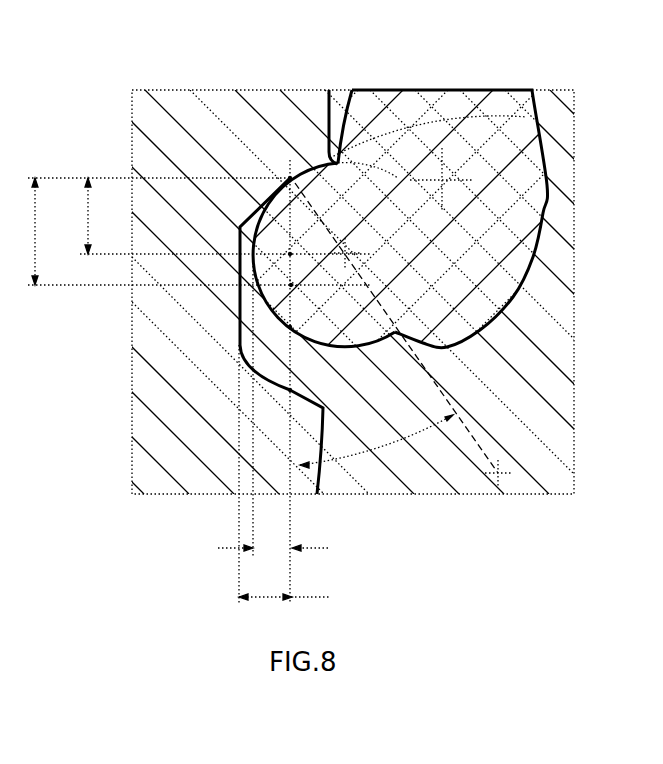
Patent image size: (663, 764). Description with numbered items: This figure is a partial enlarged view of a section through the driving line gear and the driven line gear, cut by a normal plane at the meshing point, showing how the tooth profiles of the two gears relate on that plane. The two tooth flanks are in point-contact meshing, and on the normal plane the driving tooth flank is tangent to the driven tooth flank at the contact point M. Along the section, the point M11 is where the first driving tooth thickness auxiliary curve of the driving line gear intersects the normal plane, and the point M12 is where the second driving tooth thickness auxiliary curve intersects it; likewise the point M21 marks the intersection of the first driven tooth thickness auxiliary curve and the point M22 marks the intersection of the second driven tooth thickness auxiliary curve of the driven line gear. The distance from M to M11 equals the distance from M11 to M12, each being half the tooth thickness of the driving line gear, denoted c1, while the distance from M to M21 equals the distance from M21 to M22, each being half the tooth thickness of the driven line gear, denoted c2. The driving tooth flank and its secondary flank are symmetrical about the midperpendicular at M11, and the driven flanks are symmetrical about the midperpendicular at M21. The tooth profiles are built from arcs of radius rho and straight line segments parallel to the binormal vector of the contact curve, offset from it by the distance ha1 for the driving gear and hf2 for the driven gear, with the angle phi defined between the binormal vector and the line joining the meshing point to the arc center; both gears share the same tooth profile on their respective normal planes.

The contact point M is at (287, 169).
The intersection point of first driving tooth thickness auxiliary curve M11 is at (279, 244).
The intersection point of first driven tooth thickness auxiliary curve M21 is at (306, 297).
The intersection point of second driving tooth thickness auxiliary curve M12 is at (279, 333).
The intersection point of second driven tooth thickness auxiliary curve M22 is at (305, 387).
The half tooth thickness of driving line gear c1 is at (226, 216).
The half tooth thickness of driven line gear c2 is at (200, 231).
The distance between driving tooth profile straight line segment and binormal vector ha1 is at (294, 552).
The distance between driven tooth profile straight line segment and binormal vector hf2 is at (304, 601).